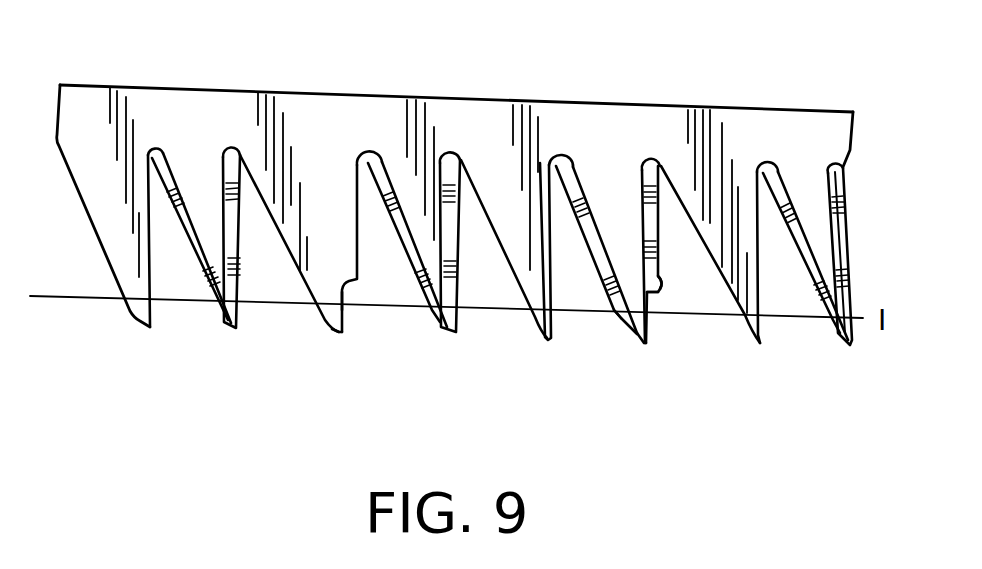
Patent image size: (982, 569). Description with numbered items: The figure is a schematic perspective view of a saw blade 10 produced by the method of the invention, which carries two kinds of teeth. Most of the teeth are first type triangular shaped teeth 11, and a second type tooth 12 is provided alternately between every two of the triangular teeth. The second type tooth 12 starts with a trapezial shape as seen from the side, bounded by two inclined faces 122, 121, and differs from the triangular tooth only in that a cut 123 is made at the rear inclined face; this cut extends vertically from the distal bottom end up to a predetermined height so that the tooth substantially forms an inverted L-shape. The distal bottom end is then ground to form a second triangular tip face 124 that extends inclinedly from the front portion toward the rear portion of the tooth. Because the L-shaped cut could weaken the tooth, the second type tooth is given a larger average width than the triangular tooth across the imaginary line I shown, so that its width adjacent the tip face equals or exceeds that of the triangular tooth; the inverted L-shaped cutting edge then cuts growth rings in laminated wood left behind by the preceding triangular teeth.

The saw blade 10 is at (456, 90).
The first type triangular shaped tooth 11 is at (133, 338).
The second type tooth 12 is at (647, 372).
The inclined face 121 is at (661, 279).
The inclined face 122 is at (623, 326).
The cut 123 is at (347, 304).
The second triangular tip face 124 is at (333, 330).